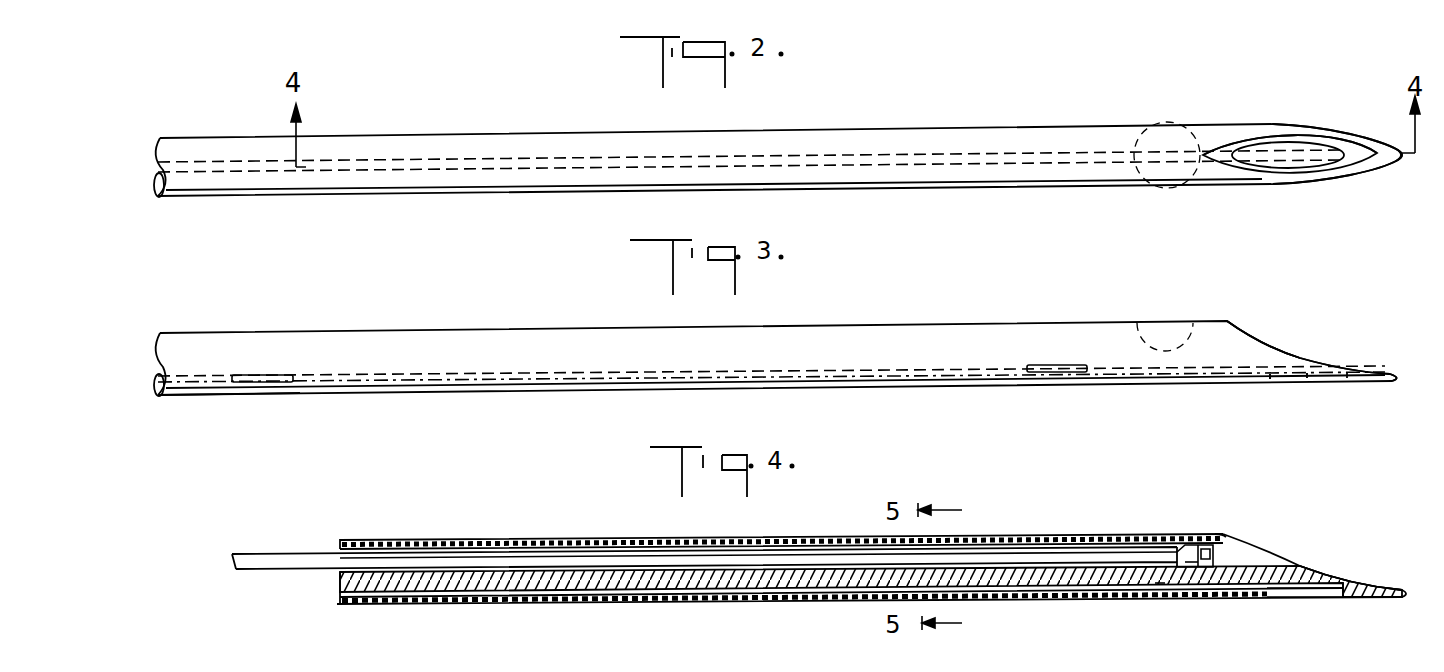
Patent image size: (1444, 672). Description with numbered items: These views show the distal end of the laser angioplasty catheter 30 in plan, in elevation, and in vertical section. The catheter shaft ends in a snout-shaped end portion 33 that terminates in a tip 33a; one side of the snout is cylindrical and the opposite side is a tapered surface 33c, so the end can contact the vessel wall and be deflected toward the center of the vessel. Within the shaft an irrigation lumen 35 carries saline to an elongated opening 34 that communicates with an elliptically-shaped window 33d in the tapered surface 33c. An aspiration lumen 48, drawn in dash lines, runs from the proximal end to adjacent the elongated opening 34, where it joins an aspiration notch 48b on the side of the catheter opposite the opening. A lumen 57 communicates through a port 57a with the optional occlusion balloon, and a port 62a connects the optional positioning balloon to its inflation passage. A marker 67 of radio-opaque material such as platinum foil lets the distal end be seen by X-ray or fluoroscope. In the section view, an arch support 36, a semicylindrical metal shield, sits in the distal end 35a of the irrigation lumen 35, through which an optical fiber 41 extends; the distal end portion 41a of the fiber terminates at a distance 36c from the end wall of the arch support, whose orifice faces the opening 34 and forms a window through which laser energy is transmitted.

In FIG. 2, the laser angioplasty catheter 30 is at (820, 196).
In FIG. 3, the laser angioplasty catheter 30 is at (841, 398).
In FIG. 2, the snout-shaped end portion 33 is at (1334, 187).
In FIG. 3, the snout-shaped end portion 33 is at (1330, 346).
In FIG. 4, the snout-shaped end portion 33 is at (1352, 560).
In FIG. 2, the tip 33a is at (1394, 160).
In FIG. 3, the tip 33a is at (1397, 381).
In FIG. 4, the tip 33a is at (1403, 597).
In FIG. 2, the tapered surface 33c is at (1303, 178).
In FIG. 3, the tapered surface 33c is at (1268, 342).
In FIG. 4, the tapered surface 33c is at (1282, 558).
In FIG. 2, the elliptically-shaped window 33d is at (1276, 141).
In FIG. 2, the elongated opening 34 is at (1270, 165).
In FIG. 4, the elongated opening 34 is at (1245, 550).
In FIG. 4, the irrigation lumen 35 is at (390, 547).
In FIG. 4, the distal end of lumen 35a is at (1160, 584).
In FIG. 4, the arch support 36 is at (718, 550).
In FIG. 4, the distance 36c is at (1192, 562).
In FIG. 4, the optical fiber 41 is at (255, 553).
In FIG. 4, the distal end portion of optical fiber 41a is at (1192, 547).
In FIG. 2, the aspiration lumen 48 is at (461, 158).
In FIG. 3, the aspiration lumen 48 is at (806, 368).
In FIG. 4, the aspiration lumen 48 is at (338, 590).
In FIG. 3, the aspiration notch 48b is at (1307, 379).
In FIG. 4, the aspiration notch 48b is at (1306, 597).
In FIG. 3, the lumen 57 is at (208, 400).
In FIG. 3, the port 57a is at (274, 382).
In FIG. 3, the port 62a is at (1047, 371).
In FIG. 2, the marker 67 is at (1124, 129).
In FIG. 3, the marker 67 is at (1185, 333).